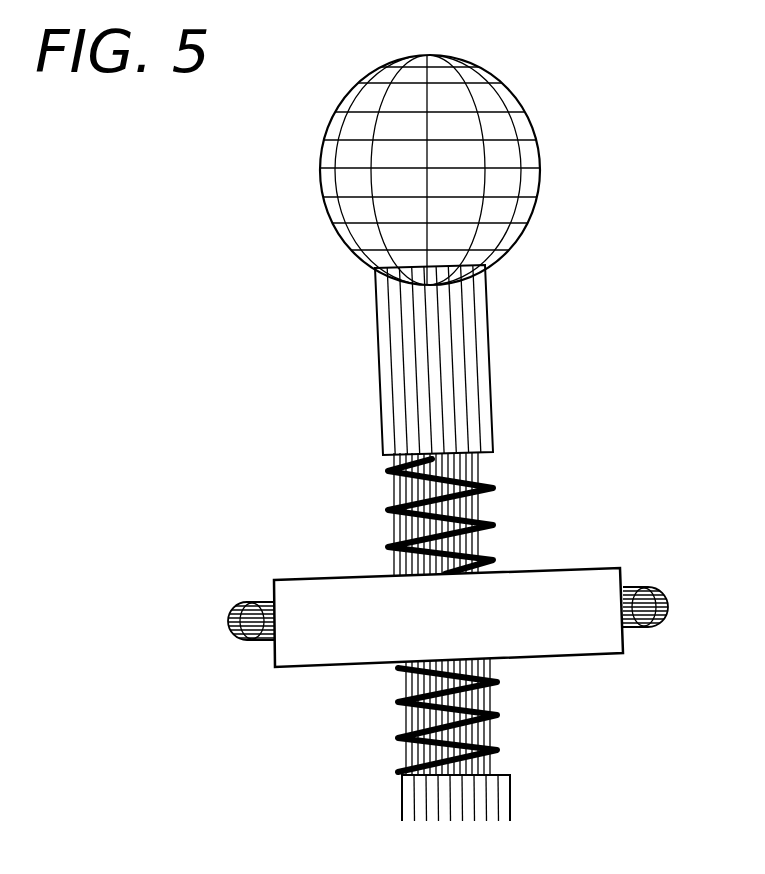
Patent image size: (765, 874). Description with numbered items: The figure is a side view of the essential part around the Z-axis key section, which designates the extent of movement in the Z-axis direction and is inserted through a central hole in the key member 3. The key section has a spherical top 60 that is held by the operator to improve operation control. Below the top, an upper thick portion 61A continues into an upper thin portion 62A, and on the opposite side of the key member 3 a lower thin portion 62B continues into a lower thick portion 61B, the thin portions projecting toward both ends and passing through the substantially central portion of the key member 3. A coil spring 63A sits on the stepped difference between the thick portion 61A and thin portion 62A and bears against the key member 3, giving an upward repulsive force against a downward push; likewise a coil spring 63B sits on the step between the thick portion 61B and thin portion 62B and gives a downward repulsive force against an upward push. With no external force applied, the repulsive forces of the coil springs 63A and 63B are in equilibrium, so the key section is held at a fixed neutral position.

The top 60 is at (508, 92).
The thick portion 61A is at (477, 312).
The thin portion 62A is at (483, 462).
The coil spring 63A is at (493, 518).
The key member 3 is at (600, 565).
The thin portion 62B is at (405, 690).
The coil spring 63B is at (495, 684).
The thick portion 61B is at (500, 790).